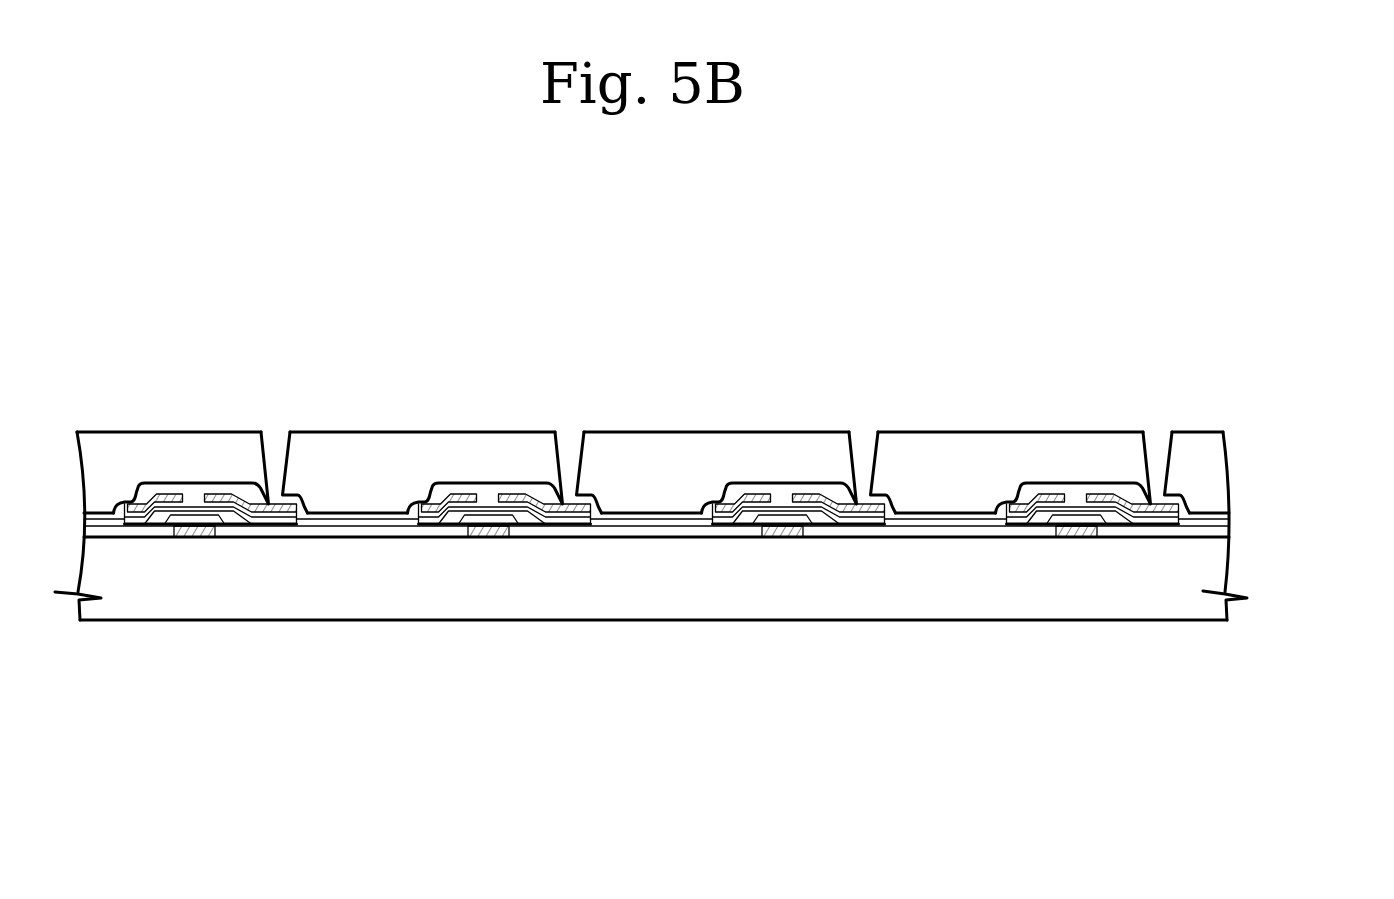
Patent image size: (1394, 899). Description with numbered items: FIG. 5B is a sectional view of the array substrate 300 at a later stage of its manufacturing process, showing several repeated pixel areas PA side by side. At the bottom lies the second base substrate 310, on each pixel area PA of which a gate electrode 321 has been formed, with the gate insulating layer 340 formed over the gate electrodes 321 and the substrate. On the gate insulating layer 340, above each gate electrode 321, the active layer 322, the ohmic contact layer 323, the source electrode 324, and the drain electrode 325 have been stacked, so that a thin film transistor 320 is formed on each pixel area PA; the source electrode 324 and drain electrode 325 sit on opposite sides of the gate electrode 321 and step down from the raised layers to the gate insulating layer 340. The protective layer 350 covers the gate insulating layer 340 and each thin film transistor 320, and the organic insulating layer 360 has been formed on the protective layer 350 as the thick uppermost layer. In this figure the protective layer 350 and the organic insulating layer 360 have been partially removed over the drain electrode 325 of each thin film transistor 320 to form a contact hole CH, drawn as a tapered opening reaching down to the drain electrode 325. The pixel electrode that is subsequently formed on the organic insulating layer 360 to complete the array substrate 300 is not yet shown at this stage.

The array substrate 300 is at (712, 549).
The second base substrate 310 is at (1213, 567).
The thin film transistor 320 is at (235, 615).
The gate electrode 321 is at (195, 526).
The active layer 322 is at (243, 521).
The ohmic contact layer 323 is at (153, 513).
The source electrode 324 is at (133, 508).
The drain electrode 325 is at (267, 508).
The gate insulating layer 340 is at (1217, 528).
The protective layer 350 is at (1218, 520).
The organic insulating layer 360 is at (1220, 473).
The contact hole CH is at (281, 429).
The pixel area PA is at (417, 768).